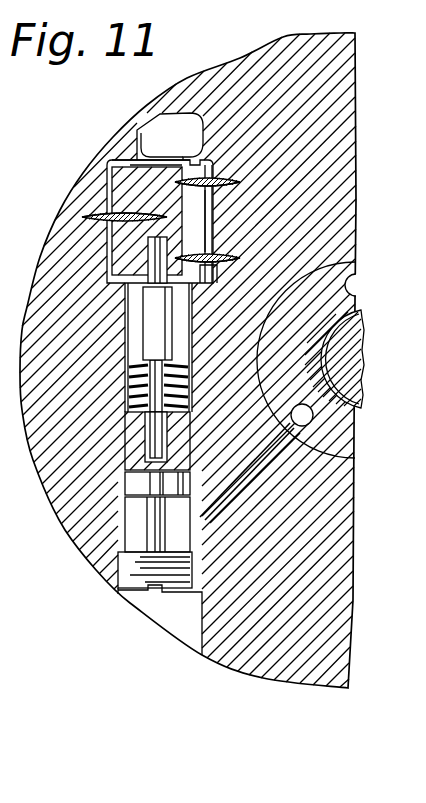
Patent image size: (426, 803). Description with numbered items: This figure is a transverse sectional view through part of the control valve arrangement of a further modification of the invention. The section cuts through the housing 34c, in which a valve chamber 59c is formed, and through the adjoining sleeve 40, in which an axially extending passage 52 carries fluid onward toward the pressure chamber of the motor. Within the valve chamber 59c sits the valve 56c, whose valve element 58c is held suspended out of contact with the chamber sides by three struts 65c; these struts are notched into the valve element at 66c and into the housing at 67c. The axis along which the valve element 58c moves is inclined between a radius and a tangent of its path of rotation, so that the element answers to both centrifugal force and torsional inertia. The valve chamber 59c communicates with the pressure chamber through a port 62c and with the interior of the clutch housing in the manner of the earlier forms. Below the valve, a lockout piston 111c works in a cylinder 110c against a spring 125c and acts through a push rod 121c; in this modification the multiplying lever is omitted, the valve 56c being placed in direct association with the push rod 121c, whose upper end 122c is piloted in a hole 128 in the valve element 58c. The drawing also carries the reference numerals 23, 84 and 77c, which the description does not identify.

The housing 34c is at (263, 670).
The valve 56c is at (98, 174).
The valve chamber 59c is at (111, 163).
The port 62c is at (170, 136).
The valve element 58c is at (213, 195).
The notch in valve element 66c is at (178, 185).
The struts 65c is at (82, 218).
The notch in housing 67c is at (83, 213).
The cylinder 110c is at (152, 348).
The upper end of push rod 122c is at (140, 289).
The hole 128 is at (108, 283).
The push rod 121c is at (124, 367).
The spring 125c is at (127, 396).
The lockout piston 111c is at (130, 490).
The sleeve 40 is at (347, 442).
The axially extending passage 52 is at (357, 285).
The cam segment 23 is at (357, 373).
The ball 84 is at (303, 415).
The passage 77c is at (247, 480).